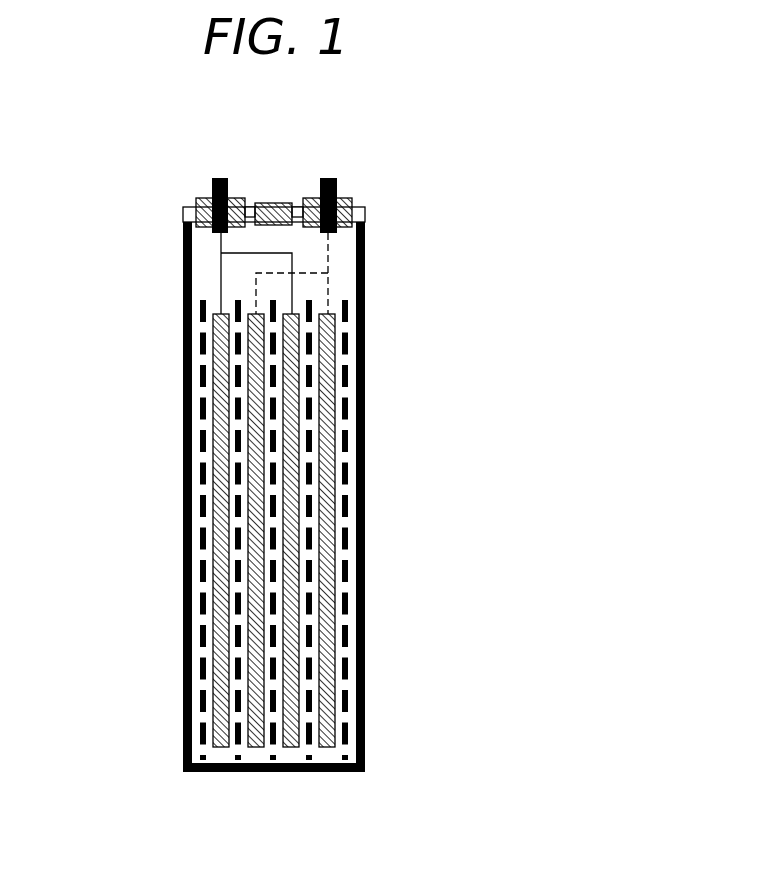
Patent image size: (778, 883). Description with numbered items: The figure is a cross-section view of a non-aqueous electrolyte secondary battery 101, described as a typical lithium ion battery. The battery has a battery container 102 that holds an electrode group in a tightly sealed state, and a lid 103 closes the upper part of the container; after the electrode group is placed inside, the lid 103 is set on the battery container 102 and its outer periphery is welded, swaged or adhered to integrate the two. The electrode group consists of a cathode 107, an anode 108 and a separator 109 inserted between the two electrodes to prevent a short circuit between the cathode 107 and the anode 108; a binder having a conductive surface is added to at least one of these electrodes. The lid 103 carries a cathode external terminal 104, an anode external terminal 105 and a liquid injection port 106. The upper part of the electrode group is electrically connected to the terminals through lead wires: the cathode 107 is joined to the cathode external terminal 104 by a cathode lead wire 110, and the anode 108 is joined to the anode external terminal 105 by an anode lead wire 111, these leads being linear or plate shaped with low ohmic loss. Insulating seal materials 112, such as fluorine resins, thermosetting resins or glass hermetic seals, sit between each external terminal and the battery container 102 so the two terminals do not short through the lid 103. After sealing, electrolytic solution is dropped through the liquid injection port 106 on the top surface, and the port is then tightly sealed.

The non-aqueous electrolyte secondary battery 101 is at (95, 424).
The battery container 102 is at (365, 442).
The lid 103 is at (183, 210).
The cathode external terminal 104 is at (219, 178).
The anode external terminal 105 is at (328, 178).
The liquid injection port 106 is at (272, 203).
The cathode 107 is at (213, 721).
The anode 108 is at (335, 720).
The separator 109 is at (203, 670).
The cathode lead wire 110 is at (220, 273).
The anode lead wire 111 is at (329, 283).
The insulating seal material 112 is at (197, 200).